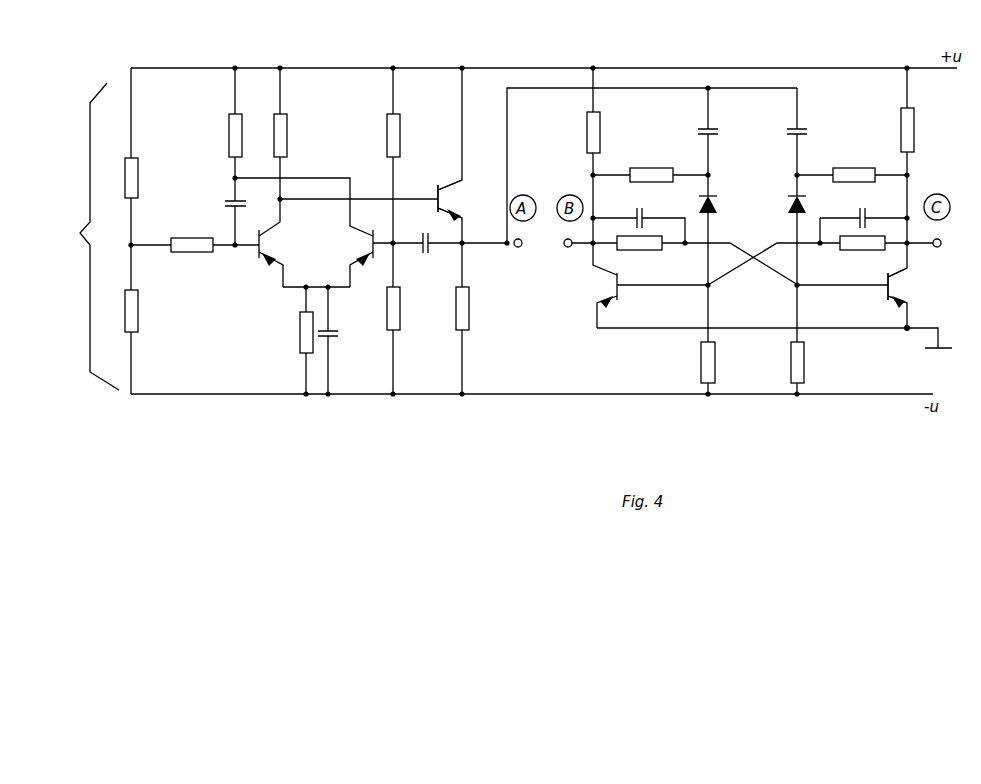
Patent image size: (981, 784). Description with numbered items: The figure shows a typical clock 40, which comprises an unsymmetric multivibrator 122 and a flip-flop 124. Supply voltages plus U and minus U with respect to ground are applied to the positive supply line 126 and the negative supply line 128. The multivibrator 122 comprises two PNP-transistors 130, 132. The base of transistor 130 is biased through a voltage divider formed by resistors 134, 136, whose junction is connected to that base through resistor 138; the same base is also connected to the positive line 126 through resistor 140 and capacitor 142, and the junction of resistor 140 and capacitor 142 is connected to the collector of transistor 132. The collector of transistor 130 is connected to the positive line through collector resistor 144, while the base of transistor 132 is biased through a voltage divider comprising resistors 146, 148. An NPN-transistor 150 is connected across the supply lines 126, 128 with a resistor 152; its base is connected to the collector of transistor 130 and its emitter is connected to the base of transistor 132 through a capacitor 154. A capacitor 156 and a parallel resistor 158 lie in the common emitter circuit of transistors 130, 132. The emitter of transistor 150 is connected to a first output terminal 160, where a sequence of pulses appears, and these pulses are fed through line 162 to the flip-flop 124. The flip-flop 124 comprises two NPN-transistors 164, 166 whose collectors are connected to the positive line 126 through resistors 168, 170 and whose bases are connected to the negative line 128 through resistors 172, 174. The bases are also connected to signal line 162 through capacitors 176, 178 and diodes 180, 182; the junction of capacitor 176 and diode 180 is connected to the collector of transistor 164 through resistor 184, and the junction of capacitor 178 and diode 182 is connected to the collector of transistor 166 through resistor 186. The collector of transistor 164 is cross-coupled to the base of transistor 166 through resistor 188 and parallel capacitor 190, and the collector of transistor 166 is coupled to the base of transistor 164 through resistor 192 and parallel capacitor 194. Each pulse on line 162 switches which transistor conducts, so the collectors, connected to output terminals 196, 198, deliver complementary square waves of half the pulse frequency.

The clock 40 is at (72, 236).
The unsymmetric multivibrator 122 is at (306, 244).
The flip-flop 124 is at (743, 175).
The positive supply line 126 is at (918, 67).
The negative supply line 128 is at (893, 396).
The PNP-transistor 130 is at (262, 262).
The PNP-transistor 132 is at (369, 258).
The resistor 134 is at (140, 181).
The resistor 136 is at (138, 318).
The resistor 138 is at (195, 246).
The resistor 140 is at (232, 133).
The capacitor 142 is at (227, 204).
The collector resistor 144 is at (283, 138).
The resistor 146 is at (396, 137).
The resistor 148 is at (396, 312).
The NPN-transistor 150 is at (445, 202).
The resistor 152 is at (464, 312).
The capacitor 154 is at (420, 233).
The capacitor 156 is at (330, 330).
The resistor 158 is at (303, 326).
The first output terminal 160 is at (507, 248).
The line 162 is at (648, 90).
The NPN-transistor 164 is at (619, 276).
The NPN-transistor 166 is at (904, 268).
The resistor 168 is at (592, 128).
The resistor 170 is at (910, 130).
The resistor 172 is at (706, 356).
The resistor 174 is at (801, 370).
The capacitor 176 is at (710, 132).
The capacitor 178 is at (800, 133).
The diode 180 is at (716, 206).
The diode 182 is at (816, 206).
The resistor 184 is at (648, 174).
The resistor 186 is at (848, 173).
The resistor 188 is at (633, 246).
The capacitor 190 is at (650, 205).
The resistor 192 is at (843, 247).
The capacitor 194 is at (864, 214).
The output terminal 196 is at (573, 253).
The output terminal 198 is at (935, 248).